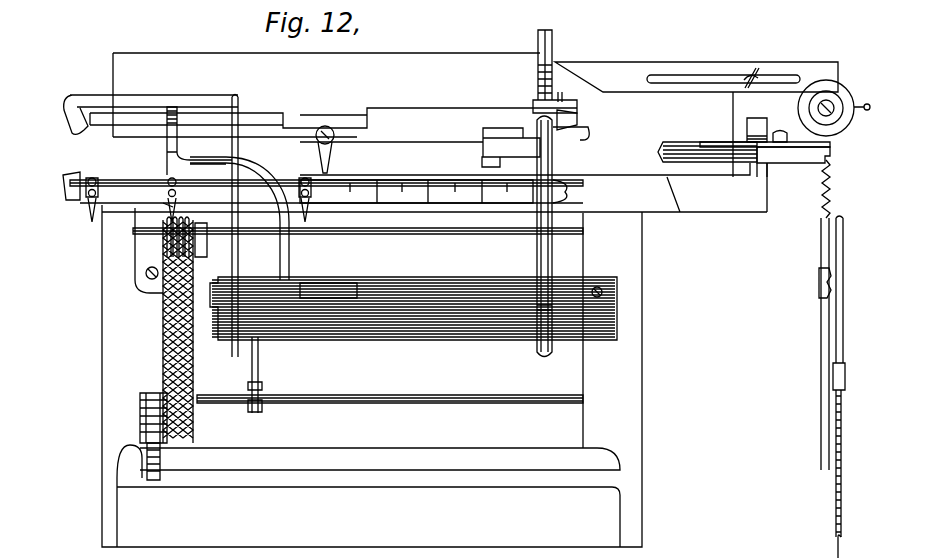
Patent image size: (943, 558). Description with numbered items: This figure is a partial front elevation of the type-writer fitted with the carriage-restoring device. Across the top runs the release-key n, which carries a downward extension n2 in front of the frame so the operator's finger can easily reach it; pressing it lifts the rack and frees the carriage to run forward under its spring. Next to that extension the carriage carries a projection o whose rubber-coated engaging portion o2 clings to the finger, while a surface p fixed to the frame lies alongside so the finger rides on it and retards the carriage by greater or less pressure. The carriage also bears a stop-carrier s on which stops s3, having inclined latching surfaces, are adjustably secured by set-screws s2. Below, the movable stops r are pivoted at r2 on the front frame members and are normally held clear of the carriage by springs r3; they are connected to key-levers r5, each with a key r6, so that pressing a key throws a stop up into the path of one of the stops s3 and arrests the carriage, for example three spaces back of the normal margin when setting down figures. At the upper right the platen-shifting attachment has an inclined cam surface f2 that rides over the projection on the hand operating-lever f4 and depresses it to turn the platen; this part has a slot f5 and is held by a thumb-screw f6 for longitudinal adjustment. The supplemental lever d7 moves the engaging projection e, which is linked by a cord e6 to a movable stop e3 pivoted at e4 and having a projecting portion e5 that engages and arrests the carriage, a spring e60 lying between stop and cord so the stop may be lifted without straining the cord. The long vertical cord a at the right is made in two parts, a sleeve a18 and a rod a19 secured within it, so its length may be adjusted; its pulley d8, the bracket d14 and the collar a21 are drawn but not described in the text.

The release-key n is at (84, 95).
The extension n2 is at (239, 98).
The stop-carrier s is at (199, 164).
The set-screws s2 is at (125, 168).
The stops s3 is at (170, 203).
The movable stops r is at (165, 245).
The pivot r2 is at (334, 226).
The springs r3 is at (163, 330).
The key-levers r5 is at (152, 480).
The key r6 is at (150, 396).
The projection o is at (289, 258).
The engaging portion o2 is at (348, 278).
The surface p is at (430, 322).
The inclined or cam surface f2 is at (590, 72).
The hand operating-lever f4 is at (553, 60).
The slot f5 is at (683, 75).
The thumb-screw f6 is at (754, 68).
The supplemental lever d7 is at (838, 120).
The disk d8 is at (836, 82).
The bracket hook d14 is at (580, 140).
The engaging projection e is at (819, 284).
The movable stop e3 is at (775, 155).
The pivot e4 is at (792, 163).
The projecting portion e5 is at (708, 142).
The cord e6 is at (821, 412).
The spring e60 is at (823, 190).
The cord a is at (838, 546).
The sleeve a18 is at (836, 366).
The rod a19 is at (836, 494).
The collar a21 is at (845, 382).